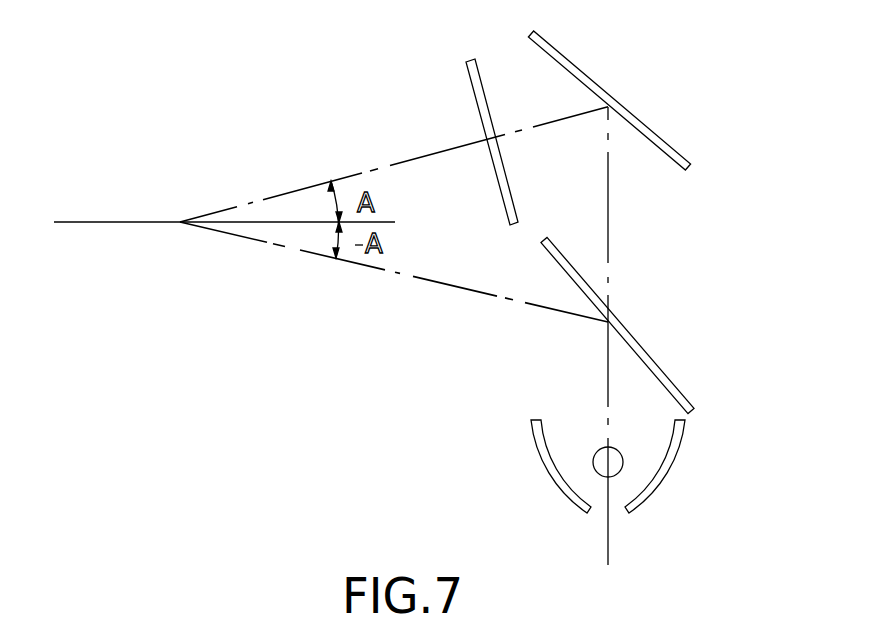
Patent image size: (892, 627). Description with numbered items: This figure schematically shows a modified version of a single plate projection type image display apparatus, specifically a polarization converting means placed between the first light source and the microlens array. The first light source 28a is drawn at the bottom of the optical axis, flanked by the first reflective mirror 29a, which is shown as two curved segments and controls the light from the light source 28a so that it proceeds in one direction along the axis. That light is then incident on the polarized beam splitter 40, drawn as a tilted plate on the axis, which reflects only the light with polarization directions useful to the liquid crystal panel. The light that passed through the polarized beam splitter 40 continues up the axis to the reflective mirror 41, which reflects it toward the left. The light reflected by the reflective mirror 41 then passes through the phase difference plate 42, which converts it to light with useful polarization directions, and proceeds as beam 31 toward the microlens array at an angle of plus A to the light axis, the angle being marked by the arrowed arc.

The light beam 31 is at (372, 272).
The phase difference plate 42 is at (472, 90).
The reflective mirror 41 is at (656, 128).
The polarized beam splitter 40 is at (656, 362).
The first reflective mirror 29a is at (672, 453).
The first light source 28a is at (623, 467).